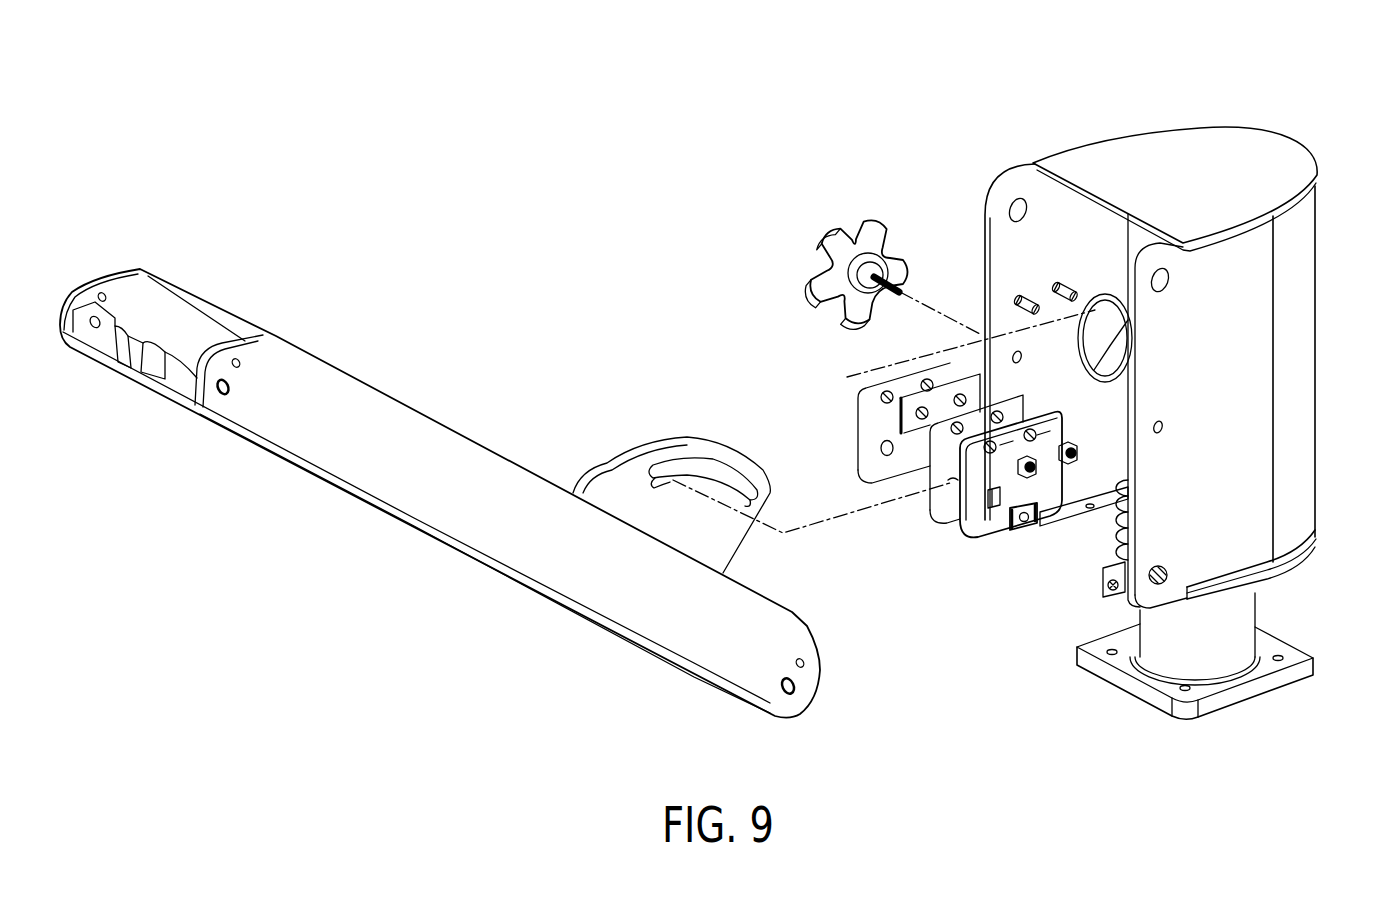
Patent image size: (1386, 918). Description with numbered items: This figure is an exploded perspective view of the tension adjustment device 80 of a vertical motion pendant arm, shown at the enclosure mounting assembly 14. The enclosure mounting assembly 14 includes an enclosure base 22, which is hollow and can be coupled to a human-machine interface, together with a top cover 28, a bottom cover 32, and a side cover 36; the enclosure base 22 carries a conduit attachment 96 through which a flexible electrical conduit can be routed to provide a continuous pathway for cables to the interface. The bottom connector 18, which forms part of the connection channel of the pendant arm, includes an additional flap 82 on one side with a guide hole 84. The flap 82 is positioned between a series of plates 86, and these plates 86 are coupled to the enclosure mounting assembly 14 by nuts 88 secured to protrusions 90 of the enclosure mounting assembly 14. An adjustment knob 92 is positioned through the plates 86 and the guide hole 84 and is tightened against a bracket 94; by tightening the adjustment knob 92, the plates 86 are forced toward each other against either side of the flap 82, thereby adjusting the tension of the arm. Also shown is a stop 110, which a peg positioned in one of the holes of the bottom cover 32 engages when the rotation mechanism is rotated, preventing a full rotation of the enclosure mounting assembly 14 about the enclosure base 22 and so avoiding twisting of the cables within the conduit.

The enclosure mounting assembly 14 is at (1183, 88).
The bottom connector 18 is at (318, 447).
The enclosure base 22 is at (1277, 683).
The top cover 28 is at (1258, 160).
The bottom cover 32 is at (1293, 558).
The side cover 36 is at (1298, 327).
The tension adjustment device 80 is at (722, 262).
The flap 82 is at (620, 483).
The guide hole 84 is at (708, 470).
The plates 86 is at (907, 428).
The nuts 88 is at (1068, 466).
The protrusions 90 is at (1057, 287).
The adjustment knob 92 is at (832, 233).
The bracket 94 is at (1023, 527).
The conduit attachment 96 is at (1112, 318).
The stop 110 is at (1107, 587).